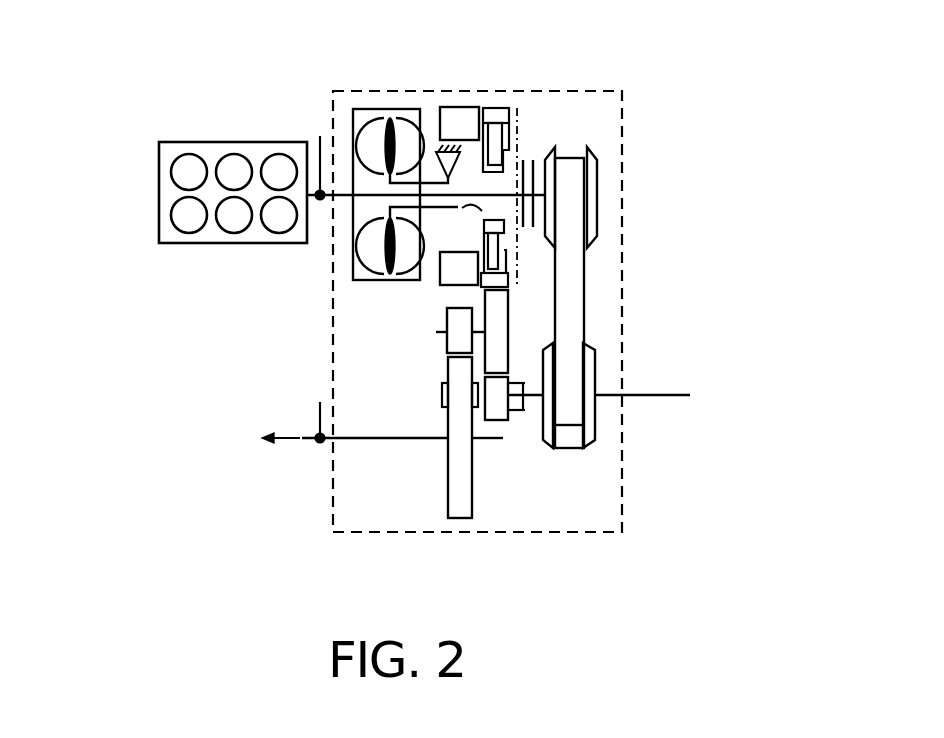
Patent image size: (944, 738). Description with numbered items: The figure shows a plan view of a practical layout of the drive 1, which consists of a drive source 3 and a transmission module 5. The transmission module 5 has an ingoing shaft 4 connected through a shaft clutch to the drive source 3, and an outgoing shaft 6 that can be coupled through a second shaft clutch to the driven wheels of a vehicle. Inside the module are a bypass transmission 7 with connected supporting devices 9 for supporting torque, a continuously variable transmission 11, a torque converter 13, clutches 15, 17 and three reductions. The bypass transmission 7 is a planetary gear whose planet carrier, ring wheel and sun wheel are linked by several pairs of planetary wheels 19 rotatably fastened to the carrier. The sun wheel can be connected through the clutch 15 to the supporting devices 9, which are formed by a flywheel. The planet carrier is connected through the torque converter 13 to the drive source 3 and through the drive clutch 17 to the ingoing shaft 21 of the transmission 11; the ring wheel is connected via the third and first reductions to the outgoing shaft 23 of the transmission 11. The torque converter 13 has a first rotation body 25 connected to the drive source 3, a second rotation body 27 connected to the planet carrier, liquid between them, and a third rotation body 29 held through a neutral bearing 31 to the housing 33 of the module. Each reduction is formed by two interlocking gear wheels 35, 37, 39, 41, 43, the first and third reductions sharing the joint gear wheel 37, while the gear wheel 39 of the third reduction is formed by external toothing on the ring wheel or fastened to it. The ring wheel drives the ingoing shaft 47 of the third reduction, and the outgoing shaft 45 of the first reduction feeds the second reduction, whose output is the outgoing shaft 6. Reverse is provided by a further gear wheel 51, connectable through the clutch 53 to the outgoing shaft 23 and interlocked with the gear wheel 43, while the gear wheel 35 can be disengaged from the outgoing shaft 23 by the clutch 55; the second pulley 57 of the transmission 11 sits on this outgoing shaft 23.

The drive 1 is at (145, 352).
The drive source 3 is at (221, 142).
The ingoing shaft 4 is at (329, 200).
The transmission module 5 is at (330, 490).
The outgoing shaft 6 is at (367, 441).
The bypass transmission 7 is at (522, 112).
The supporting devices 9 is at (458, 108).
The transmission 11 is at (598, 140).
The torque converter 13 is at (350, 287).
The clutch 15 is at (482, 226).
The drive clutch 17 is at (530, 228).
The planetary wheels 19 is at (480, 243).
The ingoing shaft of the transmission 21 is at (597, 195).
The outgoing shaft of the transmission 23 is at (661, 396).
The first rotation body 25 is at (405, 120).
The second rotation body 27 is at (370, 120).
The third rotation body 29 is at (390, 130).
The neutral bearing 31 is at (498, 170).
The housing 33 is at (440, 153).
The gear wheel 35 is at (500, 415).
The joint gear wheel 37 is at (500, 338).
The gear wheel 39 is at (508, 291).
The gear wheel 41 is at (447, 332).
The gear wheel 43 is at (448, 492).
The outgoing shaft of the first reduction 45 is at (520, 330).
The ingoing shaft of the third reduction 47 is at (507, 194).
The further gear wheel 51 is at (442, 393).
The clutch 53 is at (473, 404).
The clutch 55 is at (522, 422).
The second pulley 57 is at (569, 395).